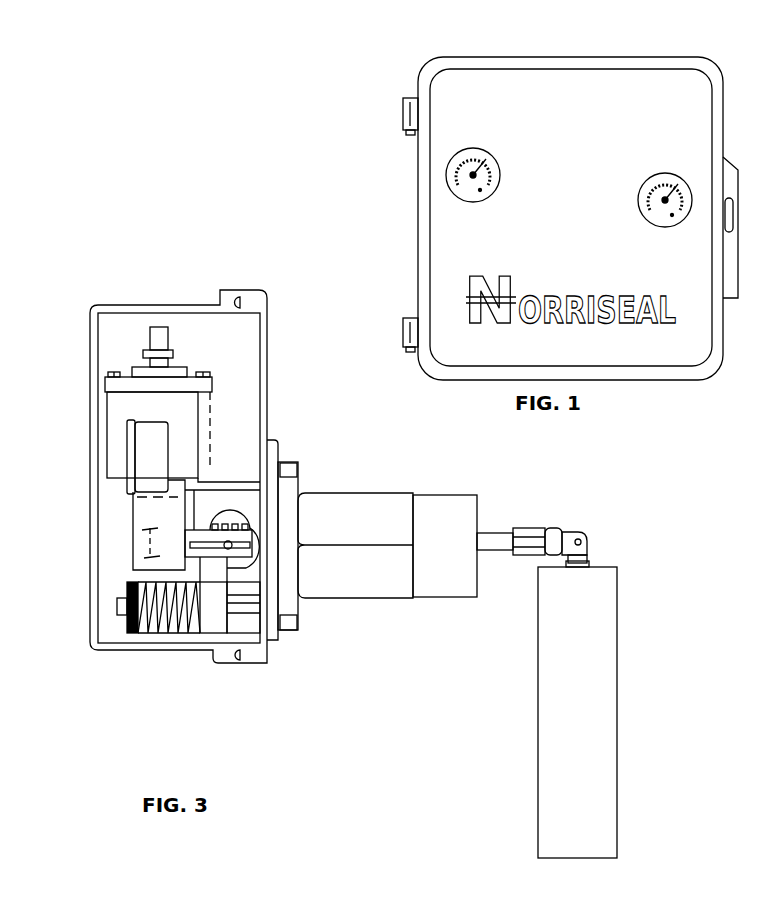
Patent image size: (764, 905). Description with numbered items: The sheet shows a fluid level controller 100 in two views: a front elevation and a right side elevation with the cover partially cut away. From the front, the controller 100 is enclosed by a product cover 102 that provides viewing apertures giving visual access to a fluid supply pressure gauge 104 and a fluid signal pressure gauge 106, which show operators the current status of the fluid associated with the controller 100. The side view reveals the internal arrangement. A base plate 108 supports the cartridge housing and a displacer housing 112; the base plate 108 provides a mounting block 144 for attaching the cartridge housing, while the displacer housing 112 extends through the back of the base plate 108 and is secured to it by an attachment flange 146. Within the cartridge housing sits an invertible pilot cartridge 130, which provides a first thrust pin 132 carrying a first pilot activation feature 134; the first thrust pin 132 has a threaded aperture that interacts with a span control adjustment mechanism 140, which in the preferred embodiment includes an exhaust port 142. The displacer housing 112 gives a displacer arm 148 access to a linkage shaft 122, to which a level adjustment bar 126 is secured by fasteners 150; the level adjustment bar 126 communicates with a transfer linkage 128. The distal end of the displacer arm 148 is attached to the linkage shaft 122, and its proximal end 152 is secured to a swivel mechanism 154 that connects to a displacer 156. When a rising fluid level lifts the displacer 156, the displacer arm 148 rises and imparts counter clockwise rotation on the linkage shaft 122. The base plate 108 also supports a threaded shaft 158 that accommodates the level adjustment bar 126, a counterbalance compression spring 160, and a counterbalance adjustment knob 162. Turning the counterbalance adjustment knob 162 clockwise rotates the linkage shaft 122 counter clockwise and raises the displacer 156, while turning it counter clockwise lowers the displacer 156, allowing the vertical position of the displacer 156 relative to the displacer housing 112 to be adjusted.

In FIG. 1, the fluid level controller 100 is at (416, 60).
In FIG. 3, the fluid level controller 100 is at (123, 274).
In FIG. 1, the product cover 102 is at (412, 213).
In FIG. 1, the fluid supply pressure gauge 104 is at (533, 167).
In FIG. 1, the fluid signal pressure gauge 106 is at (642, 190).
In FIG. 3, the base plate 108 is at (265, 372).
In FIG. 3, the displacer housing 112 is at (347, 590).
In FIG. 3, the linkage shaft 122 is at (223, 546).
In FIG. 3, the level adjustment bar 126 is at (217, 613).
In FIG. 3, the transfer linkage 128 is at (150, 513).
In FIG. 3, the invertible pilot cartridge 130 is at (186, 337).
In FIG. 3, the first thrust pin 132 is at (133, 376).
In FIG. 3, the first pilot activation feature 134 is at (212, 355).
In FIG. 3, the span control adjustment mechanism 140 is at (167, 333).
In FIG. 3, the exhaust port 142 is at (141, 322).
In FIG. 3, the mounting block 144 is at (245, 418).
In FIG. 3, the attachment flange 146 is at (272, 452).
In FIG. 3, the displacer arm 148 is at (497, 552).
In FIG. 3, the fasteners 150 is at (248, 515).
In FIG. 3, the proximal end 152 is at (518, 528).
In FIG. 3, the swivel mechanism 154 is at (543, 557).
In FIG. 3, the displacer 156 is at (558, 695).
In FIG. 3, the threaded shaft 158 is at (263, 640).
In FIG. 3, the counterbalance compression spring 160 is at (164, 646).
In FIG. 3, the counterbalance adjustment knob 162 is at (122, 637).